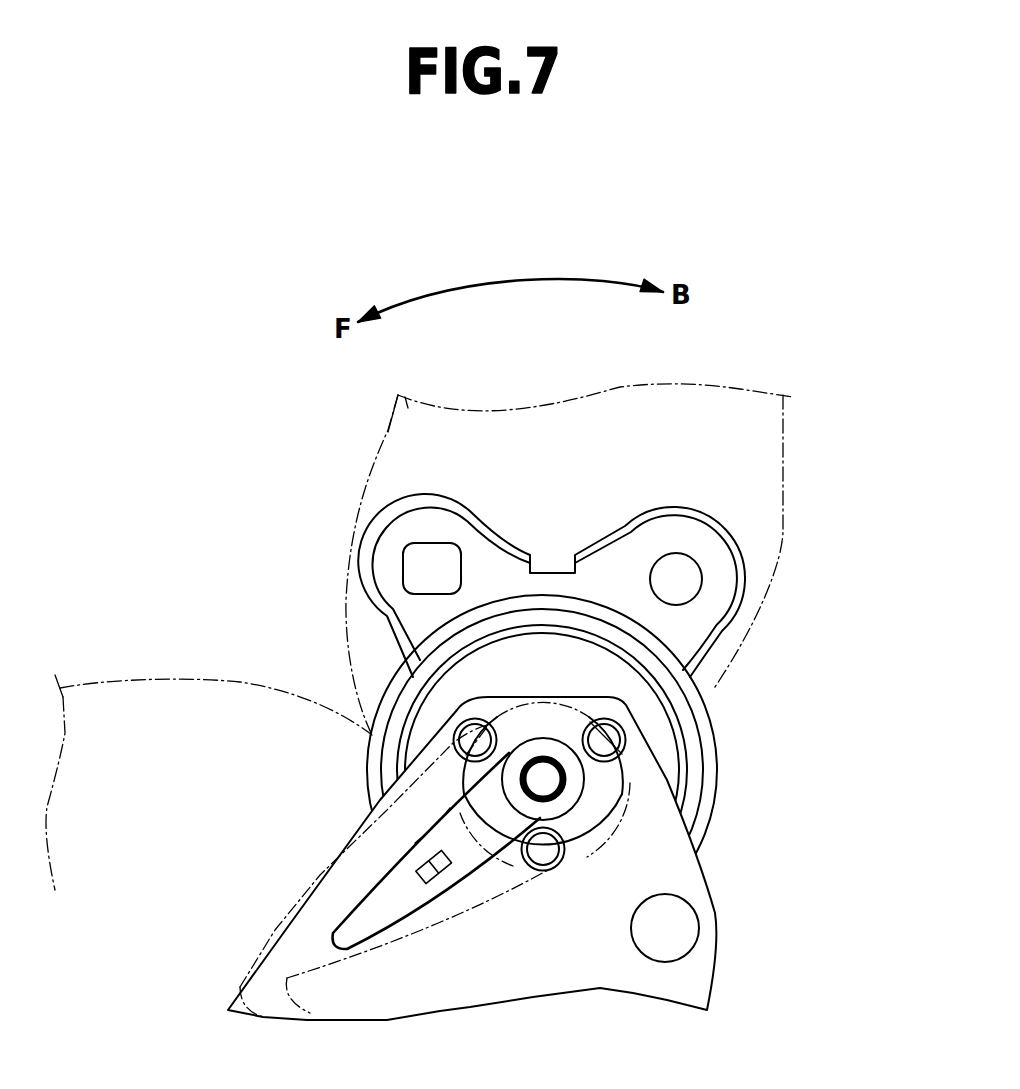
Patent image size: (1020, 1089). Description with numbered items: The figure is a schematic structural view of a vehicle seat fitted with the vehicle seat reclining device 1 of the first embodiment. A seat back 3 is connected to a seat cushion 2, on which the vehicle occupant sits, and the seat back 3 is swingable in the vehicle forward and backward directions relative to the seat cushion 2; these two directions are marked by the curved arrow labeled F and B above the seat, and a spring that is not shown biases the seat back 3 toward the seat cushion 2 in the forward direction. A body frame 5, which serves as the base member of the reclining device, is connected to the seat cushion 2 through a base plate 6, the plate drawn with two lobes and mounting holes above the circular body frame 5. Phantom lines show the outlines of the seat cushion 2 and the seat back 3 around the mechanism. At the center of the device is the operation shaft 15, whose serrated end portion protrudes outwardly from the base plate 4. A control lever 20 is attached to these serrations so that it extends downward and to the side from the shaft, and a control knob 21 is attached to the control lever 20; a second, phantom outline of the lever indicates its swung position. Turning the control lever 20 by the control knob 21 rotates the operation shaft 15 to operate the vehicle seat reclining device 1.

The vehicle seat reclining device 1 is at (769, 802).
The seat cushion 2 is at (203, 677).
The seat back 3 is at (785, 463).
The base plate 4 is at (713, 898).
The body frame 5 is at (665, 728).
The base plate 6 is at (713, 566).
The operation shaft 15 is at (546, 779).
The control lever 20 is at (383, 900).
The control knob 21 is at (252, 945).